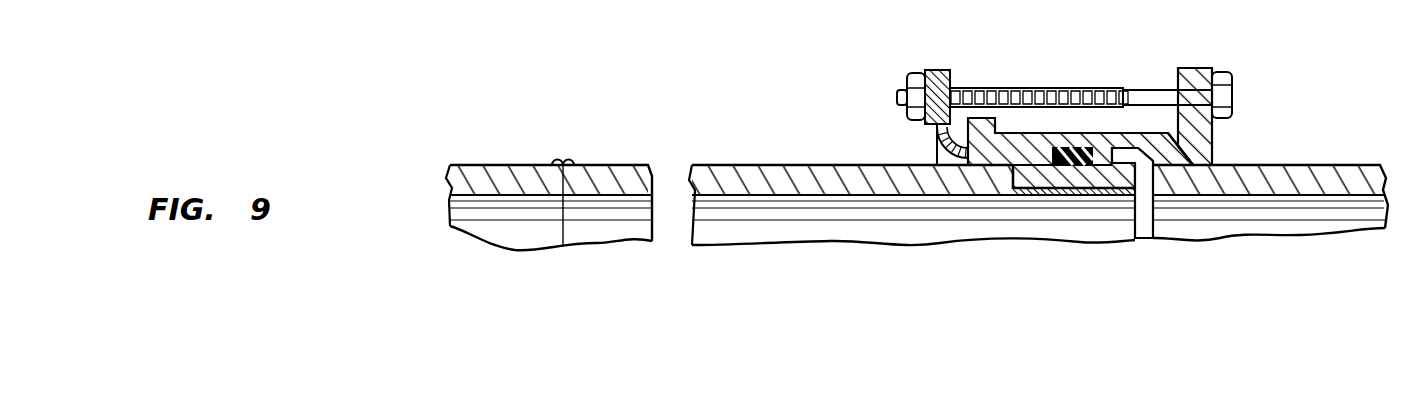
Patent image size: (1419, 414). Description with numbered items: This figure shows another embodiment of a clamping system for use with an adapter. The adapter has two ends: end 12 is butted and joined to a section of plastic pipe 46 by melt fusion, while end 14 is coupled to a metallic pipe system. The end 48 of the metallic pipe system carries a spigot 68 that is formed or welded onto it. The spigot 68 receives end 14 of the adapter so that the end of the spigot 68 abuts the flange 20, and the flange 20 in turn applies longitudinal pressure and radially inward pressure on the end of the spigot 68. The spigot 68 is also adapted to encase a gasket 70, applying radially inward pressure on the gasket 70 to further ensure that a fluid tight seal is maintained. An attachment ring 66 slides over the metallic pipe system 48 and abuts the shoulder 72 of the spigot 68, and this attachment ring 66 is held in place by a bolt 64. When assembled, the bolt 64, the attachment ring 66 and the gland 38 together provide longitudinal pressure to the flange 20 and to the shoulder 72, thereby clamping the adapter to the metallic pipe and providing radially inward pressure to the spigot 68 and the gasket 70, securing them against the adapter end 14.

The end of the adapter 12 is at (607, 163).
The end of the adapter 14 is at (795, 163).
The flange 20 is at (996, 127).
The gland 38 is at (936, 143).
The plastic pipe 46 is at (487, 163).
The end of a metallic pipe system 48 is at (1338, 163).
The bolt 64 is at (1045, 87).
The attachment ring 66 is at (1236, 114).
The spigot 68 is at (1141, 132).
The gasket 70 is at (1101, 166).
The shoulder 72 is at (1203, 157).